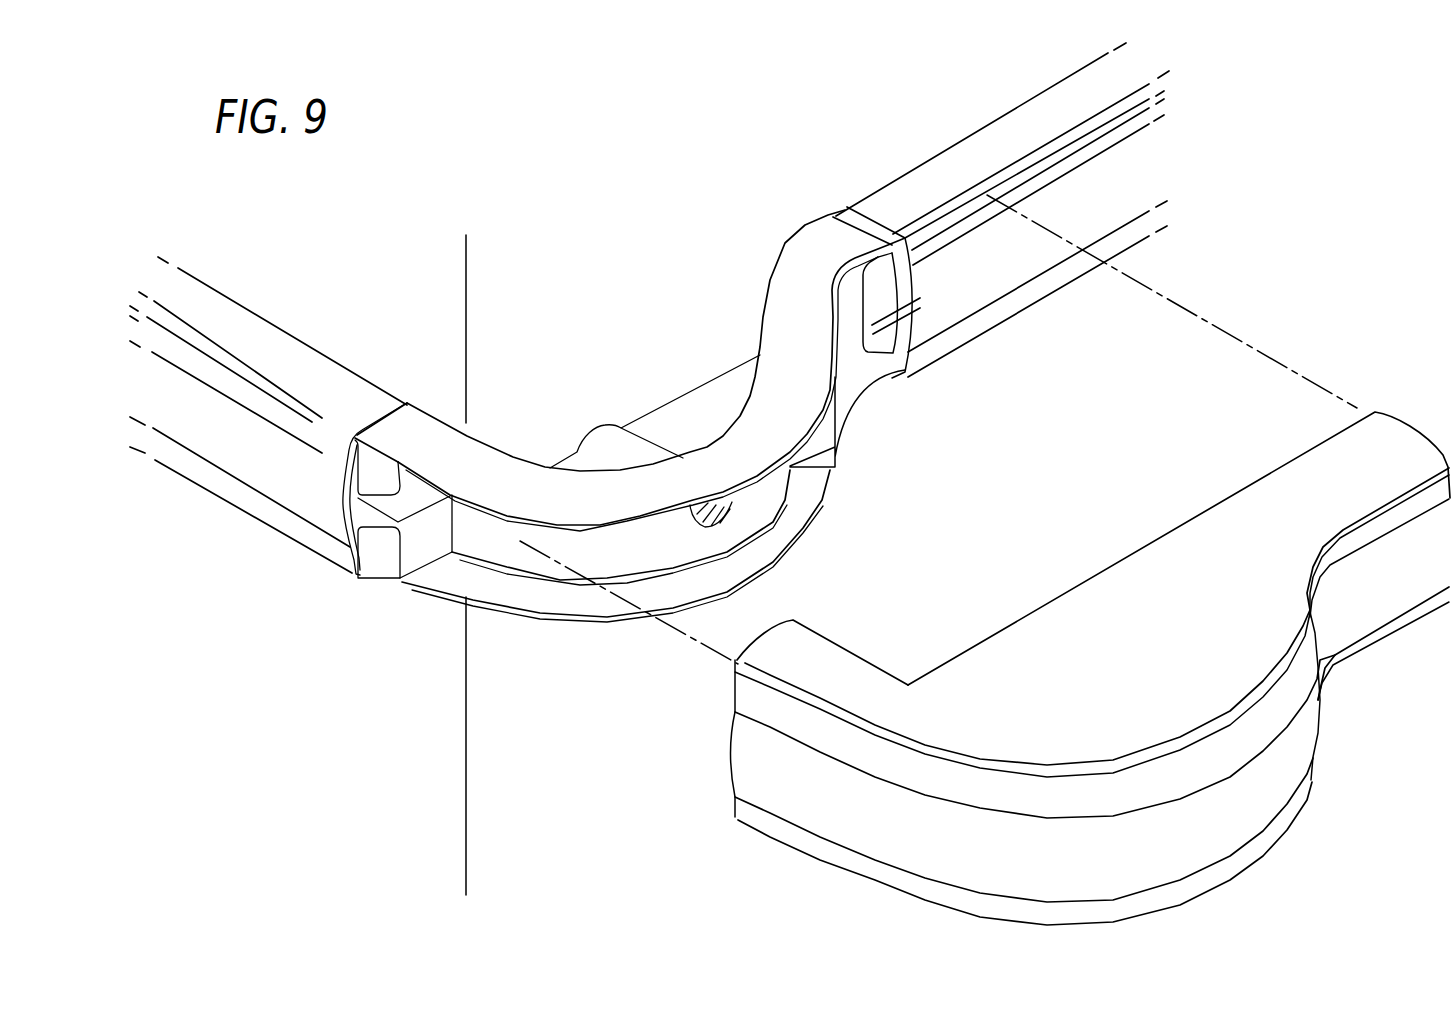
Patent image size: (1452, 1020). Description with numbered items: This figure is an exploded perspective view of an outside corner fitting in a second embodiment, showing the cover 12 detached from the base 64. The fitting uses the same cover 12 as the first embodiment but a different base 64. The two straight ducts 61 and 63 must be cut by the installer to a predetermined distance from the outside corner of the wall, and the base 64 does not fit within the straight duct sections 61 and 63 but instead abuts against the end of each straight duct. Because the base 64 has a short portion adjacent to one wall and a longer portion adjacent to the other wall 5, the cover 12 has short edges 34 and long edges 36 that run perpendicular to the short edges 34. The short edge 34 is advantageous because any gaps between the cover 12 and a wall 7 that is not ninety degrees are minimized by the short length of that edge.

The cover 12 is at (1237, 891).
The short edge 34 is at (828, 640).
The long edge 36 is at (1333, 435).
The straight duct 61 is at (288, 342).
The straight duct 63 is at (928, 183).
The base 64 is at (678, 358).
The wall 5 is at (320, 727).
The wall 7 is at (588, 226).